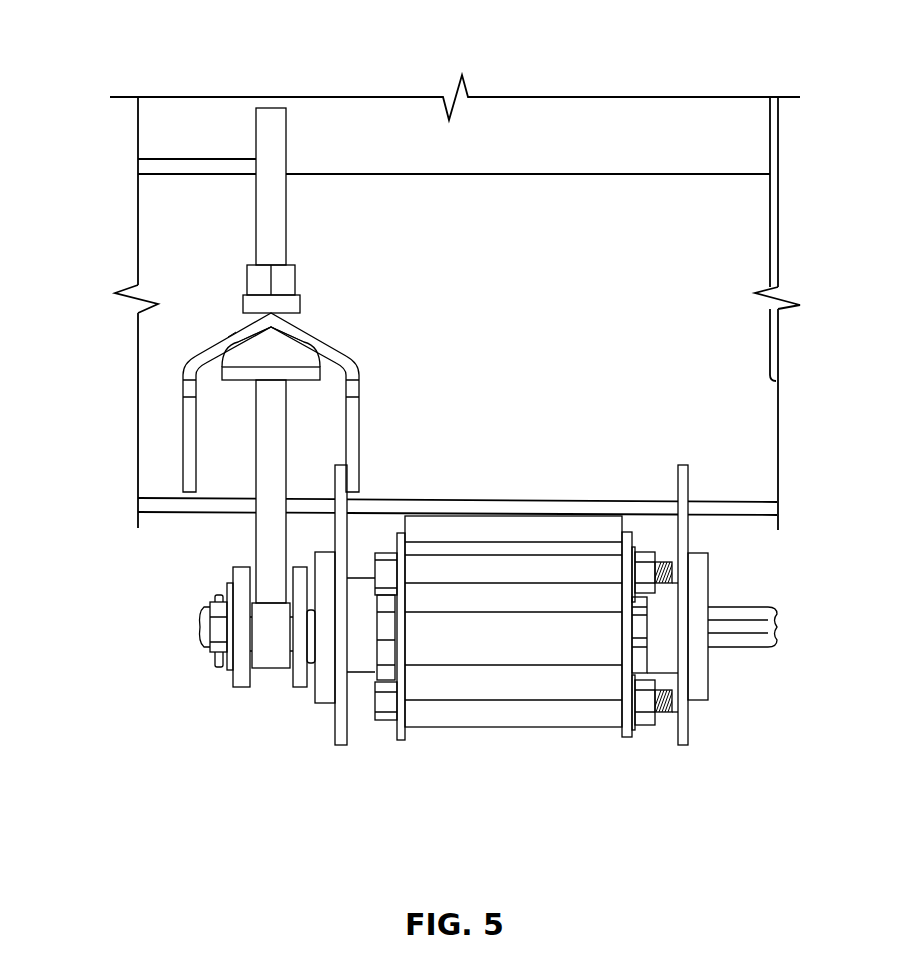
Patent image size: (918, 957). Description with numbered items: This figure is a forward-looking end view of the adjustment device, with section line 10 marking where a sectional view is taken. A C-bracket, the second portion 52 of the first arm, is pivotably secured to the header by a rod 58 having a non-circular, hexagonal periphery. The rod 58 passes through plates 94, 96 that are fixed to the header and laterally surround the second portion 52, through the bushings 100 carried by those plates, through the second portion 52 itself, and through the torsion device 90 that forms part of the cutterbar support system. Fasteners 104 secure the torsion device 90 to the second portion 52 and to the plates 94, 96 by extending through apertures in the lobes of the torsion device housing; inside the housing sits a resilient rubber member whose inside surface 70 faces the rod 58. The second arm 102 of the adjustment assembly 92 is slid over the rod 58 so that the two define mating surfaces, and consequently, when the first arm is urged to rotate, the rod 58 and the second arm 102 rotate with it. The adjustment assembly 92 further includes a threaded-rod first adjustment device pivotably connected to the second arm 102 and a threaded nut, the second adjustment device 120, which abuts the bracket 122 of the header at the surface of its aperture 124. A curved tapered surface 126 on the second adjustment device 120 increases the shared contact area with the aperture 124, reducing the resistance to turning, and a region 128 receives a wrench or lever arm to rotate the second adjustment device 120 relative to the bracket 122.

The section line 10- 10 is at (271, 108).
The second portion 52 is at (632, 737).
The rod 58 is at (757, 607).
The inside surface 70 is at (312, 672).
The torsion device 90 is at (522, 727).
The adjustment assembly 92 is at (178, 599).
The plate 94 is at (690, 727).
The plate 96 is at (335, 728).
The bushing 100 is at (353, 673).
The second arm 102 is at (233, 572).
The fastener 104 is at (386, 722).
The second adjustment device 120 is at (237, 310).
The bracket 122 is at (183, 427).
The aperture 124 is at (238, 340).
The tapered surface 126 is at (305, 345).
The region 128 is at (247, 278).